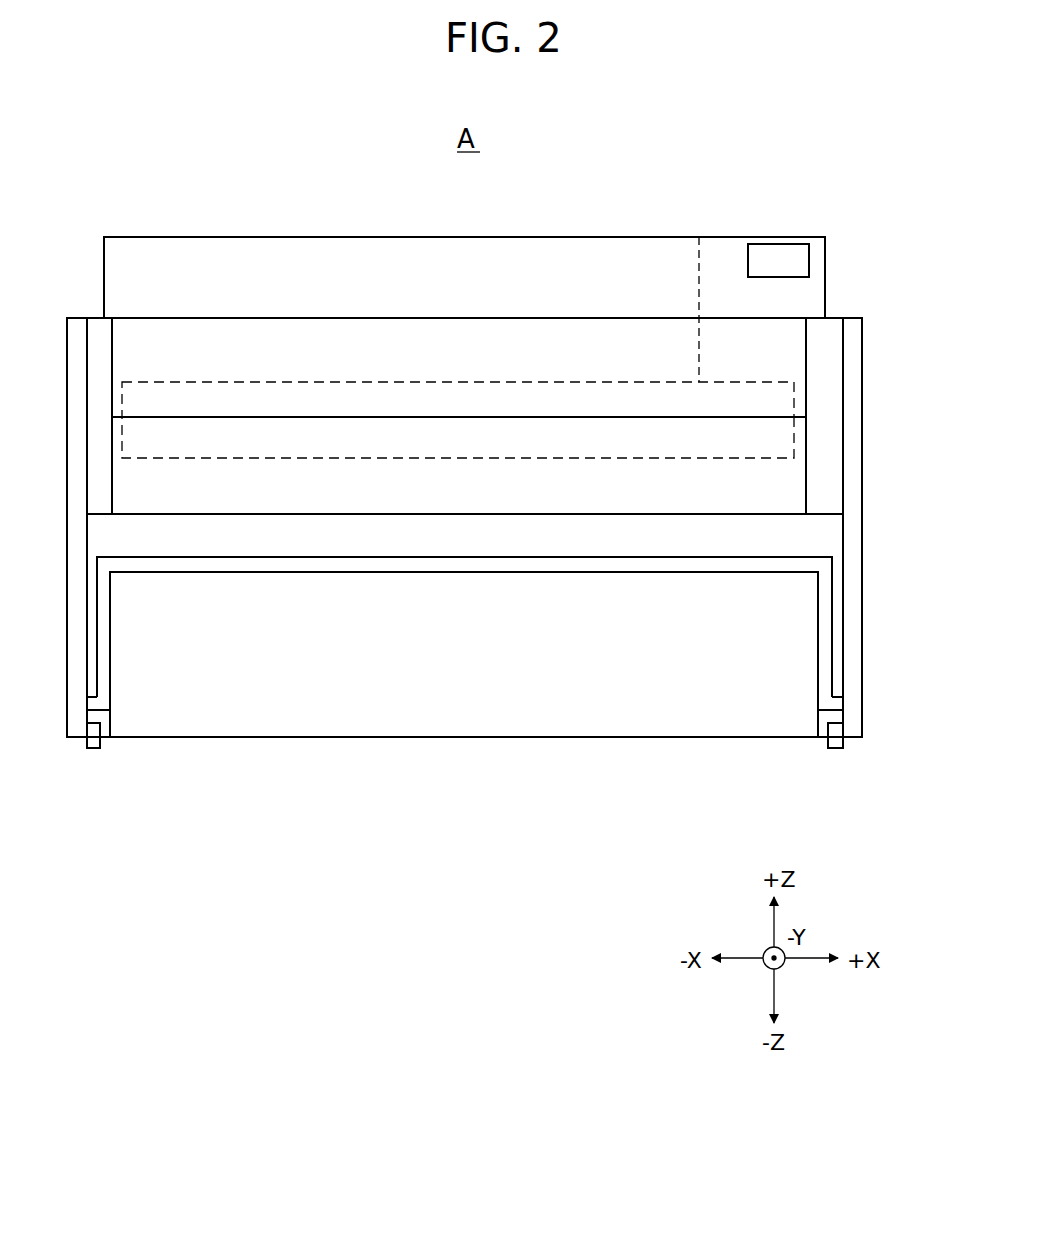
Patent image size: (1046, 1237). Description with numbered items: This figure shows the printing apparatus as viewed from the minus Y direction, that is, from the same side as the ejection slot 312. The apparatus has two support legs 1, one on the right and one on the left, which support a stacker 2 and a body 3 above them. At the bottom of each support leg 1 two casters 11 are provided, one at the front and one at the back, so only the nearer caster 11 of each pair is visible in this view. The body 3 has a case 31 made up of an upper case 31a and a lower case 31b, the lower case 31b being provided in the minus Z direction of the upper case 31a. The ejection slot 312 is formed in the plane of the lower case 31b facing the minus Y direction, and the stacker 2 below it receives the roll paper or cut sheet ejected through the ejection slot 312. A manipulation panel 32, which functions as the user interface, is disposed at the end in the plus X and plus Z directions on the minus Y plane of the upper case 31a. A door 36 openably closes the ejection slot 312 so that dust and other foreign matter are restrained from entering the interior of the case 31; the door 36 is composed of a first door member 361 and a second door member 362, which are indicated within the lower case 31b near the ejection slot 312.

The support leg 1 is at (80, 625).
The caster 11 is at (91, 742).
The stacker 2 is at (457, 760).
The body 3 is at (581, 217).
The case 31 is at (528, 492).
The upper case 31a is at (800, 296).
The lower case 31b is at (507, 533).
The ejection slot 312 is at (699, 237).
The manipulation panel 32 is at (810, 262).
The door 36 is at (458, 298).
The first door member 361 is at (209, 343).
The second door member 362 is at (290, 438).